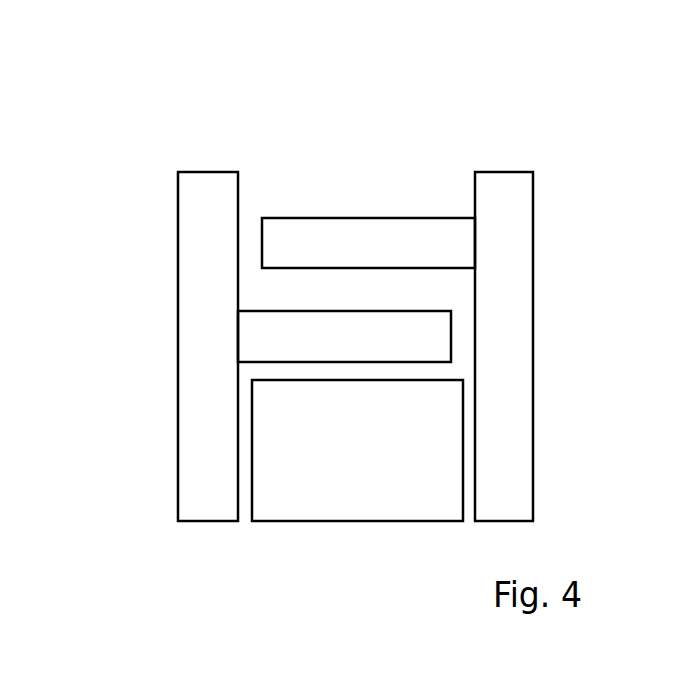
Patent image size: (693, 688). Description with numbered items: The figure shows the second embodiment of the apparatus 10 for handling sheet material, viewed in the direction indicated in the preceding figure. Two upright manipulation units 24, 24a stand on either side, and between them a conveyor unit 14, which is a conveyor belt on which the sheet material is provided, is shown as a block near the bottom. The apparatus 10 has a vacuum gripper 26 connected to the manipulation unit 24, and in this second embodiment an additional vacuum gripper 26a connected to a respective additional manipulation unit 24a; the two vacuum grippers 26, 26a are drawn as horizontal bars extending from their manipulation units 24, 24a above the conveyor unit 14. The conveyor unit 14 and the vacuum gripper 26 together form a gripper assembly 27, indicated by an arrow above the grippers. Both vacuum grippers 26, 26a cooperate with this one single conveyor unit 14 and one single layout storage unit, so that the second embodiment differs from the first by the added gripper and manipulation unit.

The apparatus 10 is at (585, 120).
The conveyor unit 14 is at (342, 500).
The manipulation unit 24 is at (519, 203).
The additional manipulation unit 24a is at (198, 327).
The vacuum gripper 26 is at (422, 232).
The additional vacuum gripper 26a is at (428, 342).
The gripper assembly 27 is at (434, 132).